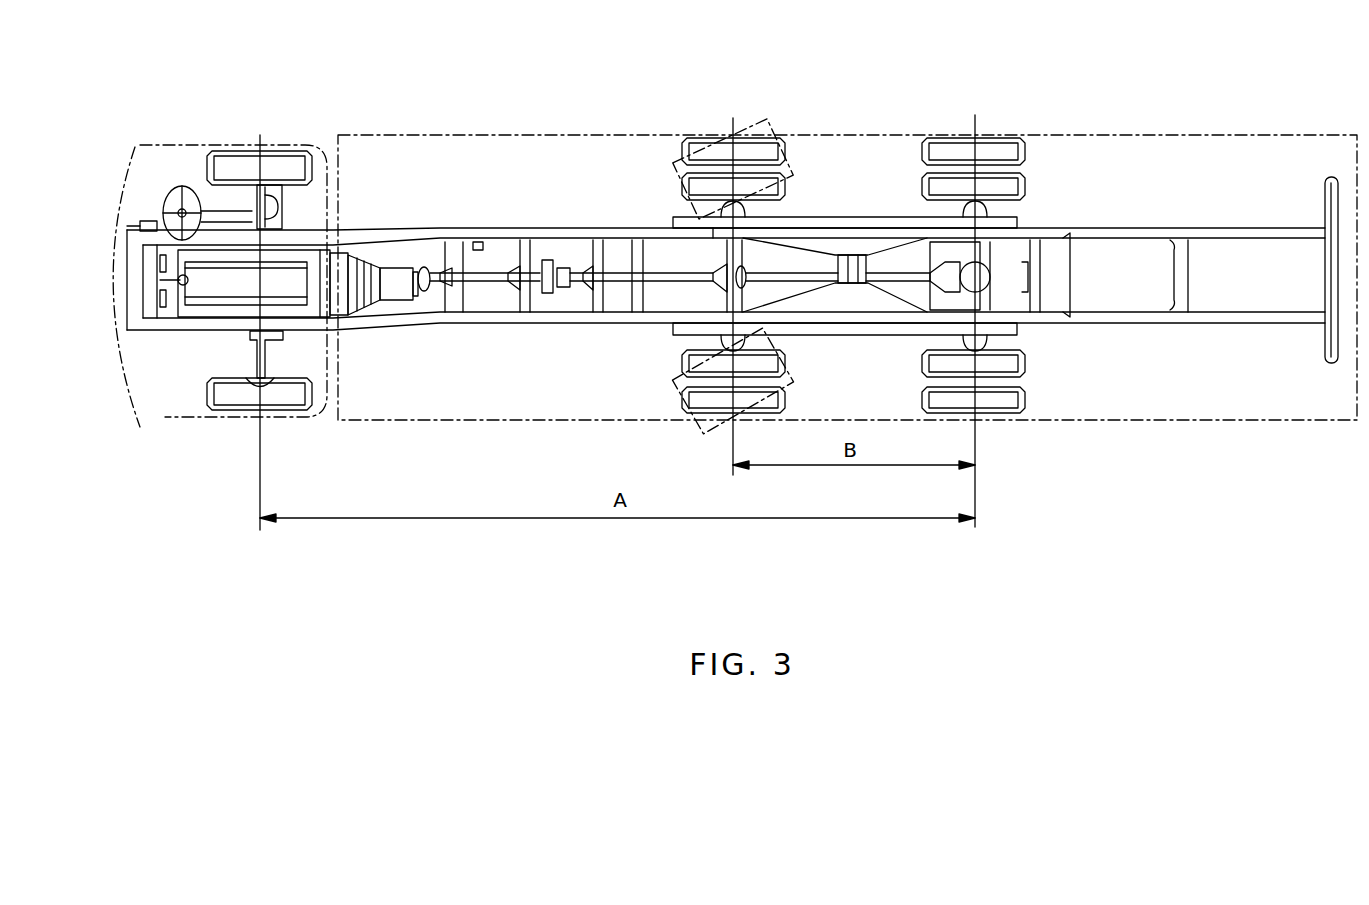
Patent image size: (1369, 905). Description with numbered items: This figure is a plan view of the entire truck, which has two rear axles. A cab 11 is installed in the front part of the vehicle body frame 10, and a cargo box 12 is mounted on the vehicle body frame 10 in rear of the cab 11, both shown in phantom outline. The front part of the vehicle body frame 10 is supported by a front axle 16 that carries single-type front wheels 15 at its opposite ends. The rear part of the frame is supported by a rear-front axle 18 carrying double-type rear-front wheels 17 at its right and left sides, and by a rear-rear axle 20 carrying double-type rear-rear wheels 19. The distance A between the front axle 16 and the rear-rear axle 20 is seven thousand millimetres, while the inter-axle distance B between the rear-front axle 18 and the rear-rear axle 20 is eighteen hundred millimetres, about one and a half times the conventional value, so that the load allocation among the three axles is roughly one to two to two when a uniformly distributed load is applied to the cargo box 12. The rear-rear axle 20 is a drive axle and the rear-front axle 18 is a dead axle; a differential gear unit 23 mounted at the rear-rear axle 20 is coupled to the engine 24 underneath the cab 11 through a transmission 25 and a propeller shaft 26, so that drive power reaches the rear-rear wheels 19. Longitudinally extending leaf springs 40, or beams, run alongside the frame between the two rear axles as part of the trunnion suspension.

The vehicle body frame 10 is at (1148, 226).
The cab 11 is at (187, 143).
The cargo box 12 is at (1112, 131).
The front wheels 15 is at (300, 150).
The front axle 16 is at (250, 343).
The rear-front wheels 17 is at (762, 122).
The rear-front axle 18 is at (718, 340).
The rear-rear wheels 19 is at (990, 146).
The rear-rear axle 20 is at (992, 337).
The differential gear unit 23 is at (1022, 270).
The engine 24 is at (280, 308).
The transmission 25 is at (405, 270).
The propeller shaft 26 is at (585, 270).
The leaf springs 40 is at (885, 216).